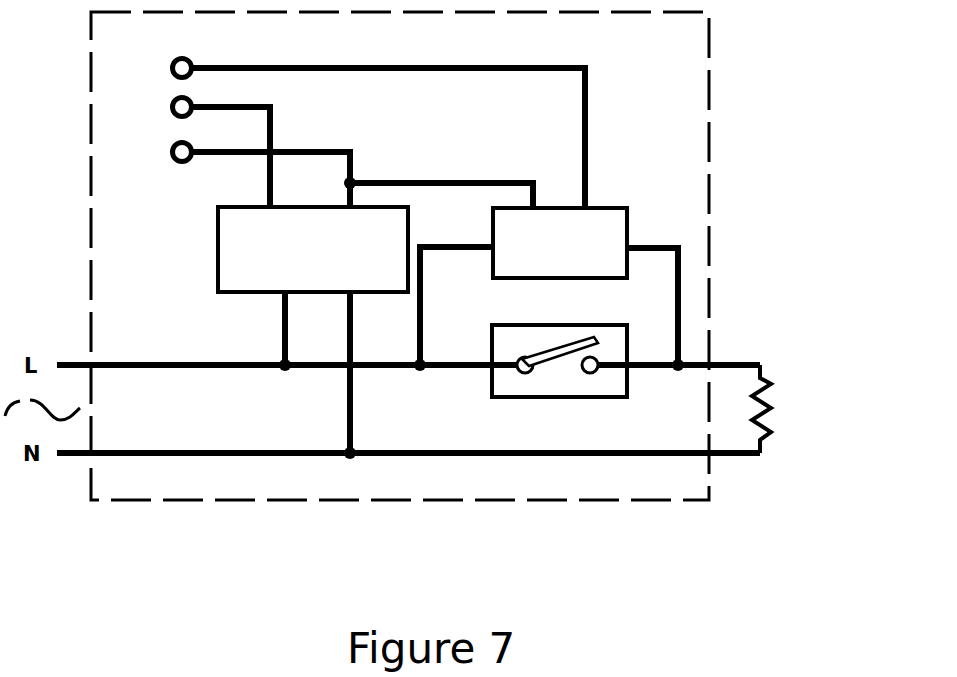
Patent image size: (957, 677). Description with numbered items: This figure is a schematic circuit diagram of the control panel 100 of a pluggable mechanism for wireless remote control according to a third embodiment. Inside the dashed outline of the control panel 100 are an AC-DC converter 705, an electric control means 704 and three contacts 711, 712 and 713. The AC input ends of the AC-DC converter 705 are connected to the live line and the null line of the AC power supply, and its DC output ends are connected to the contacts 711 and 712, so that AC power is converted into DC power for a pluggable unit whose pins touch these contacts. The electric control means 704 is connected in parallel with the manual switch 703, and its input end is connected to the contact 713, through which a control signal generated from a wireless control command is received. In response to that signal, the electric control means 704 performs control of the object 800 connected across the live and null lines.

The control panel 100 is at (709, 95).
The contact 713 is at (350, 131).
The contact 712 is at (192, 150).
The contact 711 is at (324, 173).
The AC-DC converter 705 is at (410, 228).
The electric control means 704 is at (628, 222).
The manual switch 703 is at (558, 325).
The object 800 is at (775, 400).